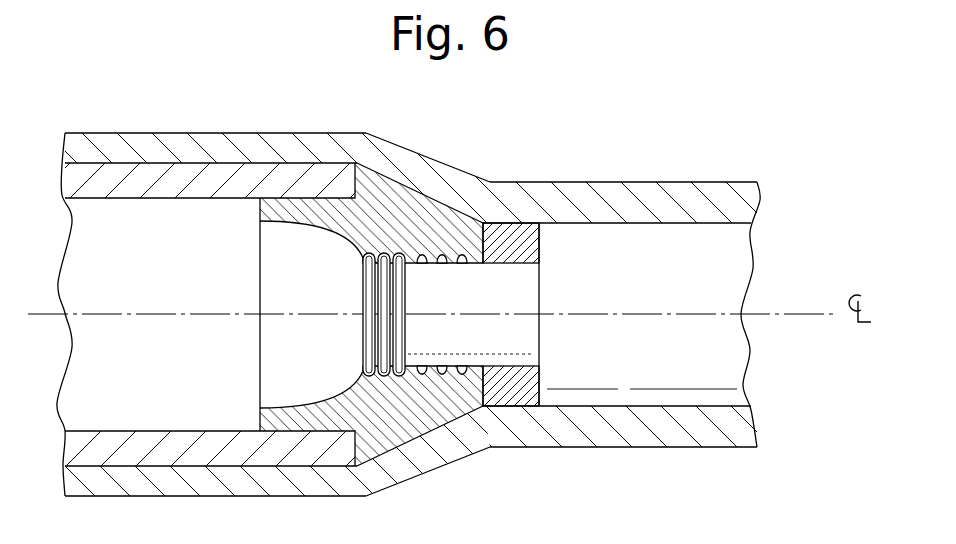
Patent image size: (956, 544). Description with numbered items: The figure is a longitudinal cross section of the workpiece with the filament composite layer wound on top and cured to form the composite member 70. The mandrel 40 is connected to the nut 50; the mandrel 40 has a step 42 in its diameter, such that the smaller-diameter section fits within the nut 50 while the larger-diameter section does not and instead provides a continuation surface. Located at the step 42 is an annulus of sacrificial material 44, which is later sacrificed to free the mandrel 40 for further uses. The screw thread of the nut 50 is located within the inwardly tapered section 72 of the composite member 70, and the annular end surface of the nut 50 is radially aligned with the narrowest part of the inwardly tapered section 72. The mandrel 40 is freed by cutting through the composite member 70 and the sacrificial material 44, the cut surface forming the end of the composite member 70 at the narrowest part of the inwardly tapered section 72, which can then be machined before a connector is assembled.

The mandrel 40 is at (683, 375).
The step 42 is at (521, 380).
The annulus of sacrificial material 44 is at (513, 237).
The nut 50 is at (408, 412).
The composite member 70 is at (178, 140).
The inwardly tapered section 72 is at (438, 182).